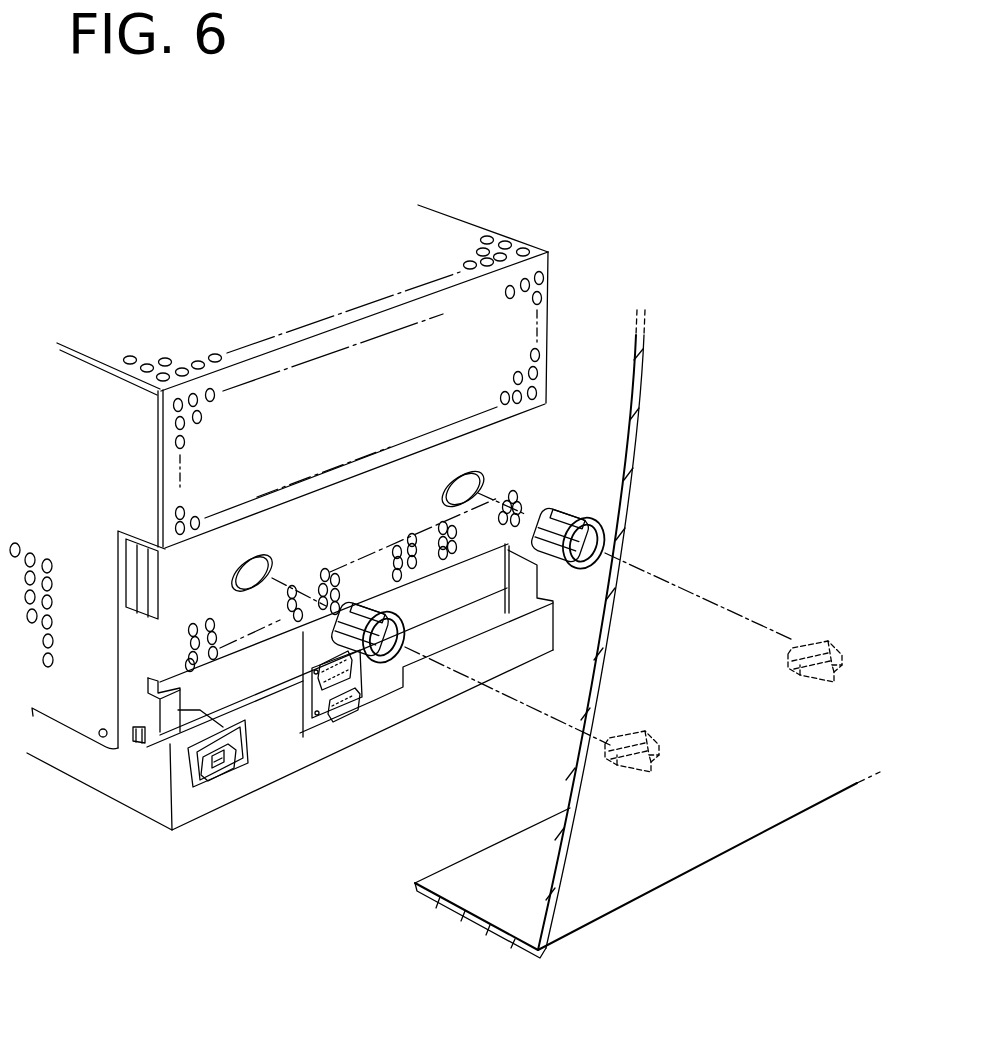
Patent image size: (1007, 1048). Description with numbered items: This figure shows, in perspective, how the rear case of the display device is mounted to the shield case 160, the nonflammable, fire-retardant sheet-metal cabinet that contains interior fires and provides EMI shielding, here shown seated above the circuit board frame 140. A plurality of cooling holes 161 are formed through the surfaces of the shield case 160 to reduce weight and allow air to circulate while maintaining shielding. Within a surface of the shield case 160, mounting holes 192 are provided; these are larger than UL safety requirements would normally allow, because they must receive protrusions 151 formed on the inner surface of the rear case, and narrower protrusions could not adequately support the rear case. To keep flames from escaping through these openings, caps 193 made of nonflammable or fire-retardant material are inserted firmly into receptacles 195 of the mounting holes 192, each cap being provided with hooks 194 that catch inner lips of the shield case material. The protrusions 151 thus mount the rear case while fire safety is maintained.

The circuit board frame 140 is at (137, 793).
The shield case 160 is at (463, 248).
The cooling holes 161 is at (534, 388).
The mounting holes 192 is at (490, 477).
The caps 193 is at (603, 526).
The hooks 194 is at (565, 510).
The receptacles 195 is at (601, 566).
The protrusions 151 is at (798, 647).